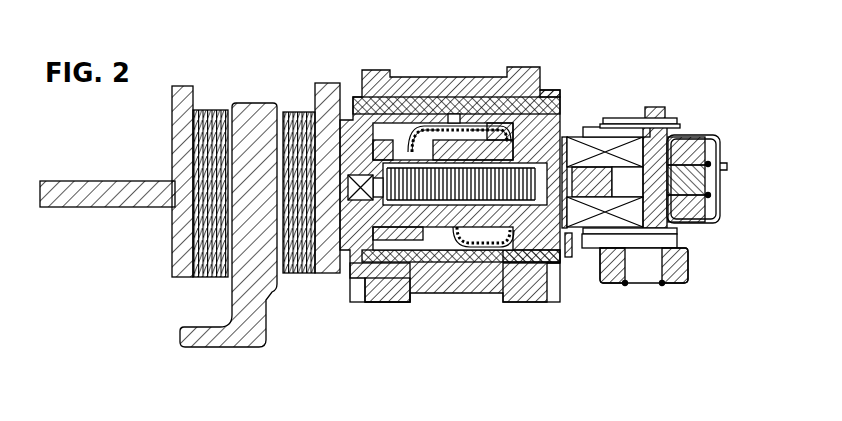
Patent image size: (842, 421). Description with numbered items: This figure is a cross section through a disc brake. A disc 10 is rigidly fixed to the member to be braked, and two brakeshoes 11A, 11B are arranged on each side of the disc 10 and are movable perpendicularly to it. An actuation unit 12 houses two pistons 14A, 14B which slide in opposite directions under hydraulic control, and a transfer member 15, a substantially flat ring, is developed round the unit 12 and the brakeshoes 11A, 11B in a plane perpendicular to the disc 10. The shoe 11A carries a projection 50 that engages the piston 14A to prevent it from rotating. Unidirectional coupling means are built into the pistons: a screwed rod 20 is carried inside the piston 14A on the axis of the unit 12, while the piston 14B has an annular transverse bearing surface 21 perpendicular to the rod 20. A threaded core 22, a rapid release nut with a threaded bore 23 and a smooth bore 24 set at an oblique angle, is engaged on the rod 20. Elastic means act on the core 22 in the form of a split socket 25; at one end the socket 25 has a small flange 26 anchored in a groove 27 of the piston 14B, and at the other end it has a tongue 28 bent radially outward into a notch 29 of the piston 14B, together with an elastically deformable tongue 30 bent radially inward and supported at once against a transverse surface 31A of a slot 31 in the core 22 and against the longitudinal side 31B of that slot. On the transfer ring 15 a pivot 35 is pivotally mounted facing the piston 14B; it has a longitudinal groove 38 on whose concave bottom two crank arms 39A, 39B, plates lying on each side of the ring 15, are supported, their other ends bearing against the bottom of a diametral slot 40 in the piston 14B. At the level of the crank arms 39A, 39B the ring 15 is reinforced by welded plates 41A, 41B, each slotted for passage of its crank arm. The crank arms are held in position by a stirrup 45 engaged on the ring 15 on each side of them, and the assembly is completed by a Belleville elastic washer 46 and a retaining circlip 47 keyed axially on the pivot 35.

The disc 10 is at (248, 101).
The brakeshoe 11A is at (290, 276).
The brakeshoe 11B is at (193, 283).
The actuation unit 12 is at (516, 63).
The piston 14A is at (358, 268).
The piston 14B is at (547, 281).
The transfer member 15 is at (108, 171).
The screwed rod 20 is at (566, 136).
The annular transverse bearing surface 21 is at (483, 252).
The threaded core 22 is at (421, 258).
The threaded bore 23 is at (346, 122).
The smooth bore 24 is at (392, 296).
The split socket 25 is at (455, 121).
The small flange 26 is at (553, 96).
The groove 27 is at (503, 274).
The tongue 28 is at (455, 263).
The notch 29 is at (428, 248).
The elastically deformable tongue 30 is at (437, 126).
The slot 31 is at (403, 142).
The transverse surface 31A is at (452, 126).
The longitudinal side 31B is at (414, 128).
The pivot 35 is at (678, 250).
The longitudinal groove 38 is at (648, 108).
The crank arm 39A is at (618, 138).
The crank arm 39B is at (628, 212).
The diametral slot 40 is at (570, 258).
The reinforcing plate 41A is at (699, 136).
The reinforcing plate 41B is at (690, 230).
The stirrup 45 is at (726, 167).
The Belleville elastic washer 46 is at (680, 124).
The retaining circlip 47 is at (672, 118).
The projection 50 is at (352, 173).